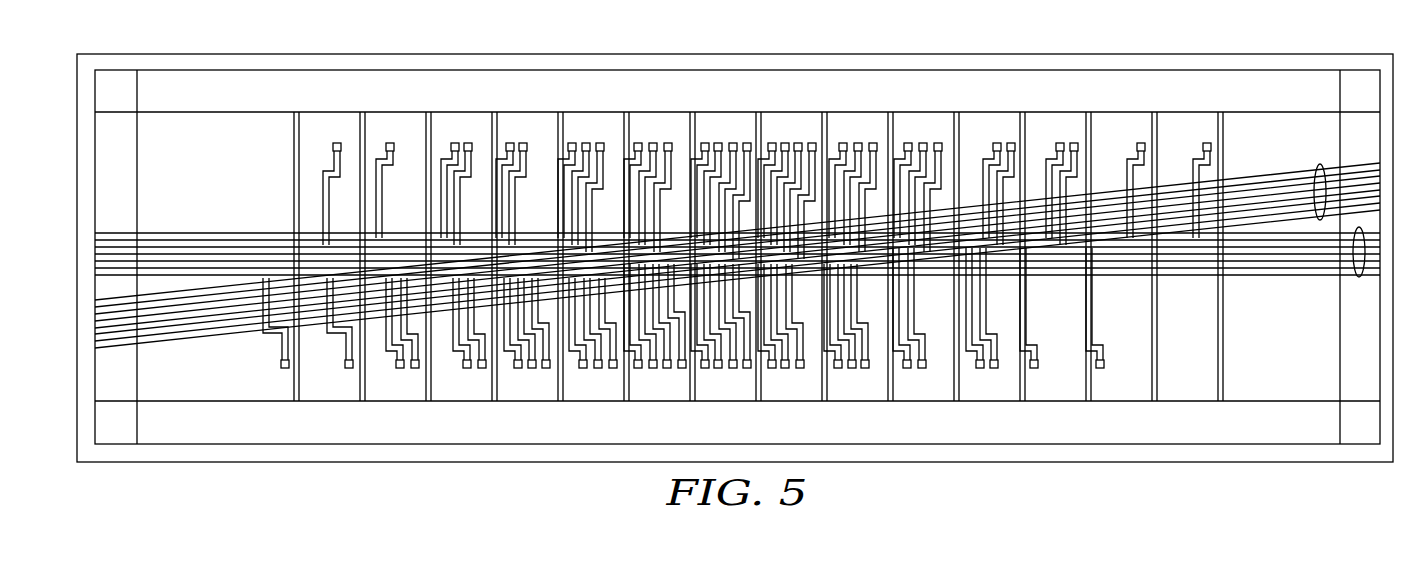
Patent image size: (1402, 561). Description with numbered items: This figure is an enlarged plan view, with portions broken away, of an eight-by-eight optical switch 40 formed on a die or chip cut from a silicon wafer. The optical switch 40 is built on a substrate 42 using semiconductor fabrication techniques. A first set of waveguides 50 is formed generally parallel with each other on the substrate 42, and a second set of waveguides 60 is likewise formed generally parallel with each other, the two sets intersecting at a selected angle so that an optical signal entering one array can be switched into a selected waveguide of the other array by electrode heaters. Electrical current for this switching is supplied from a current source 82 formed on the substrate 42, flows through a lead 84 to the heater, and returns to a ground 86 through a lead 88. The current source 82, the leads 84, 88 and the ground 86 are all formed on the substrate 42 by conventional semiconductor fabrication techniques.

The optical switch 40 is at (402, 477).
The substrate 42 is at (1271, 459).
The first set of waveguides 50 is at (1358, 279).
The second set of waveguides 60 is at (1318, 171).
The current source 82 is at (285, 368).
The lead 84 is at (282, 338).
The ground 86 is at (333, 148).
The lead 88 is at (320, 191).